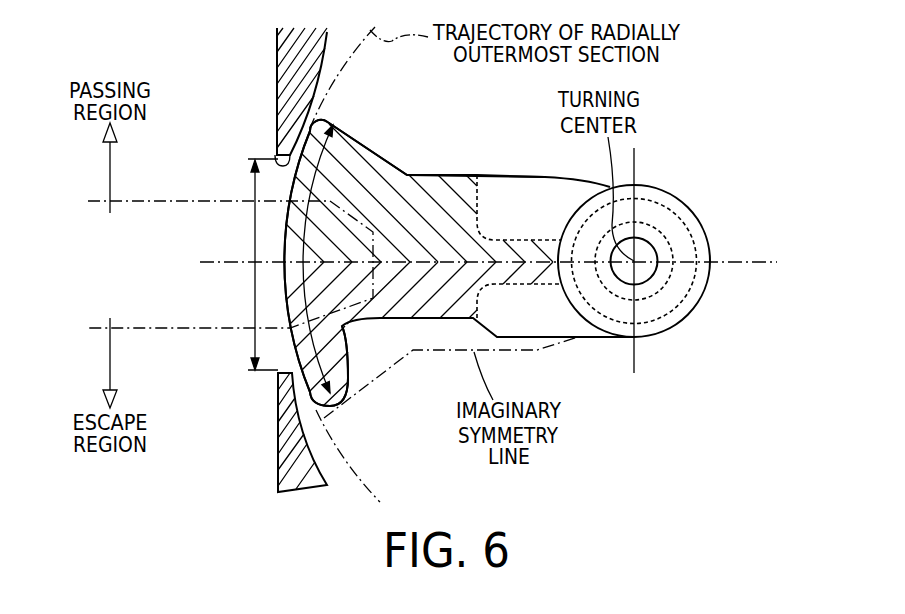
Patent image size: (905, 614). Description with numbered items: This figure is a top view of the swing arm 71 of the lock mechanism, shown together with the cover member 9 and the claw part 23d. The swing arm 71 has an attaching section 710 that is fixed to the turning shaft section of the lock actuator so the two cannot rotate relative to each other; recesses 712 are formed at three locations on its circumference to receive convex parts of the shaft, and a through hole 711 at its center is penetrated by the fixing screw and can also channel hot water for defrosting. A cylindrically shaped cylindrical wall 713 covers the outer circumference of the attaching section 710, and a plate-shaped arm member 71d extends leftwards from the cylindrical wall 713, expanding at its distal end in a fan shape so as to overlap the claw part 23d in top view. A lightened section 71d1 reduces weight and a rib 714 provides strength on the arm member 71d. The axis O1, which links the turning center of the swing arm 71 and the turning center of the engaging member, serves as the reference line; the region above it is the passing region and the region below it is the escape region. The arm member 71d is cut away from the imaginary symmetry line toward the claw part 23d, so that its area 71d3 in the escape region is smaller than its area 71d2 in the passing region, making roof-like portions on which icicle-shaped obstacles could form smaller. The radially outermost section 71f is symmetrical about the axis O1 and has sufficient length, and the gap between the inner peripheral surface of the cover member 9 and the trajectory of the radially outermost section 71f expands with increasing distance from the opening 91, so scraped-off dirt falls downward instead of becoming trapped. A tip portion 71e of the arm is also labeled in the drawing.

The cover member 9 is at (265, 58).
The opening 91 is at (283, 163).
The claw part 23d is at (204, 313).
The swing arm 71 is at (556, 357).
The radially outermost section 71f is at (287, 241).
The arm member 71d is at (414, 163).
The lightened section 71d1 is at (491, 194).
The area of the arm member in the passing region 71d2 is at (443, 190).
The area of the arm member in the escape region 71d3 is at (453, 296).
The tip portion of arm 71e is at (340, 330).
The rib 714 is at (529, 238).
The attaching section 710 is at (668, 218).
The through hole 711 is at (638, 240).
The recesses 712 is at (660, 285).
The cylindrical wall 713 is at (708, 217).
The axis O1 is at (750, 253).